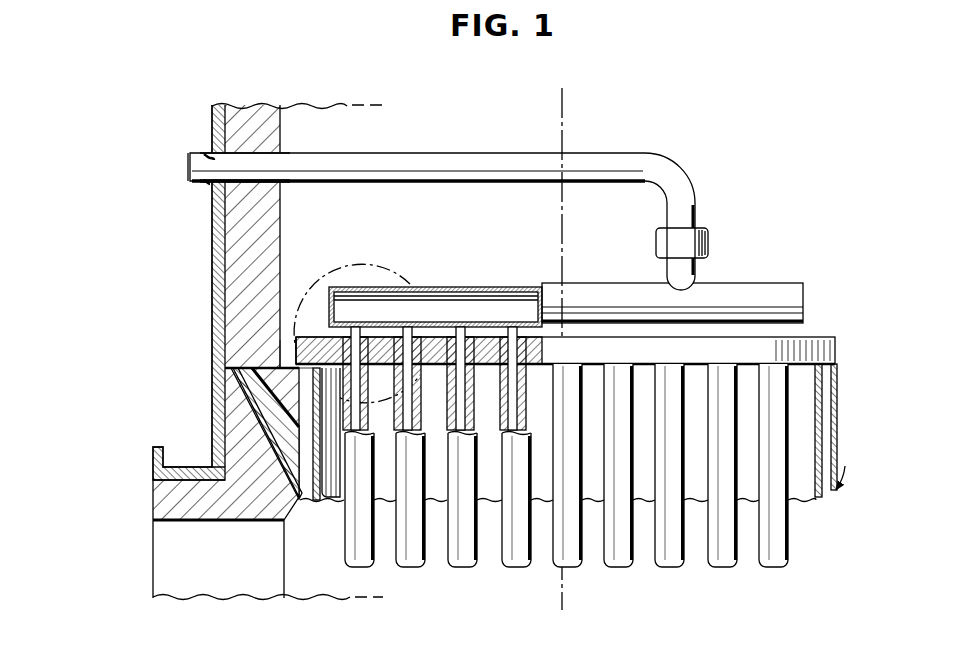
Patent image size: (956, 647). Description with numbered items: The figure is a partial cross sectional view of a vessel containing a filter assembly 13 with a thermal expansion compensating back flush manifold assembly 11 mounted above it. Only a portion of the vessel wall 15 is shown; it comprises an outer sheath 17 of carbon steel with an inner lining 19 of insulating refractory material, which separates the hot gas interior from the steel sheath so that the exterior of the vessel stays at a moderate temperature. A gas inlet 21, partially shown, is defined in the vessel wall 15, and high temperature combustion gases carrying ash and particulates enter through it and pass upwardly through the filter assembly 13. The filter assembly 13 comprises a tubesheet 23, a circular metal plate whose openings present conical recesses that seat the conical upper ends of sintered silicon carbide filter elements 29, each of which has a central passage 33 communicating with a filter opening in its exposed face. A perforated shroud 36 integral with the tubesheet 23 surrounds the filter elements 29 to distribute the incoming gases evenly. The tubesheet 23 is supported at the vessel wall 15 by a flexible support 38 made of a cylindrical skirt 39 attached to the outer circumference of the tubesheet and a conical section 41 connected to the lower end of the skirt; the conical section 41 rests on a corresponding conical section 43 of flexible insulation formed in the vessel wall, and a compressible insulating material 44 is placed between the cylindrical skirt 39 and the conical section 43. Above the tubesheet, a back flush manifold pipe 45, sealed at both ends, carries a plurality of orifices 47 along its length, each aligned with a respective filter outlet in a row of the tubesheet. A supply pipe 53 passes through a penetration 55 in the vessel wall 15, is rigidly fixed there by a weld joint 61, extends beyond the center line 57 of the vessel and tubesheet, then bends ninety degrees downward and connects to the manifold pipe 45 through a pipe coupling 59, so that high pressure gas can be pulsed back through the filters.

The back flush manifold assembly 11 is at (720, 170).
The filter assembly 13 is at (840, 358).
The vessel wall 15 is at (197, 240).
The outer sheath 17 is at (218, 300).
The inner lining 19 is at (272, 233).
The gas inlet 21 is at (188, 553).
The tubesheet 23 is at (808, 335).
The sintered silicon carbide filter 29 is at (408, 487).
The central passage 33 is at (398, 426).
The perforated shroud 36 is at (322, 466).
The flexible support 38 is at (290, 360).
The cylindrical skirt 39 is at (308, 478).
The conical section 41 is at (250, 402).
The conical section of flexible insulation 43 is at (267, 437).
The compressible insulating material 44 is at (257, 383).
The back flush manifold pipe 45 is at (752, 290).
The orifices 47 is at (396, 287).
The supply pipe 53 is at (607, 152).
The penetration 55 is at (278, 155).
The center line 57 is at (560, 128).
The pipe coupling 59 is at (656, 242).
The weld joint 61 is at (208, 157).